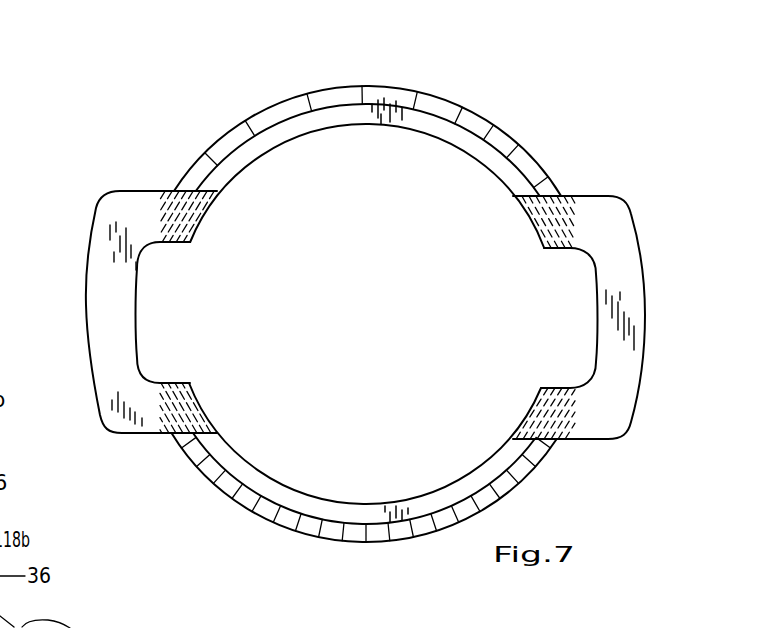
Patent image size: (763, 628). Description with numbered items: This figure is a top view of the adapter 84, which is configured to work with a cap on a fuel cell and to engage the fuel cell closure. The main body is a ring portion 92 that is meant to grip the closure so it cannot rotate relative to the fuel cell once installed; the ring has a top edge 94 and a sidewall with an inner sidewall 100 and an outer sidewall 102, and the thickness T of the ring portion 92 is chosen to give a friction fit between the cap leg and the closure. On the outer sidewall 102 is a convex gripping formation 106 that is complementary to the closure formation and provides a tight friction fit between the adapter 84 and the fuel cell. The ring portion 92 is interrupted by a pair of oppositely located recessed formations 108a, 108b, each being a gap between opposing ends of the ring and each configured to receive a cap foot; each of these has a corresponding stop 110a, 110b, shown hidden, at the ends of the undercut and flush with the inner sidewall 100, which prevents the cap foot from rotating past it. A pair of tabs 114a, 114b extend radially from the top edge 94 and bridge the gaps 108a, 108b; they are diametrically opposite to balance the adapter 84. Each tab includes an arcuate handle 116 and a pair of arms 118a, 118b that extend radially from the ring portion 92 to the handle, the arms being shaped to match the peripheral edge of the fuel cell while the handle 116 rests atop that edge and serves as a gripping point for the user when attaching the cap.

The adapter 84 is at (603, 95).
The ring portion 92 is at (508, 128).
The top edge 94 is at (354, 112).
The inner sidewall 100 is at (413, 130).
The outer sidewall 102 is at (432, 94).
The convex gripping formation 106 is at (424, 538).
The recessed formation 108a is at (150, 341).
The recessed formation 108b is at (570, 292).
The stop 110a is at (216, 174).
The stop 110b is at (512, 464).
The tab 114a is at (143, 416).
The tab 114b is at (614, 375).
The arcuate handle 116 is at (105, 300).
The arm 118a is at (146, 202).
The arm 118b is at (163, 436).
The thickness T is at (363, 460).